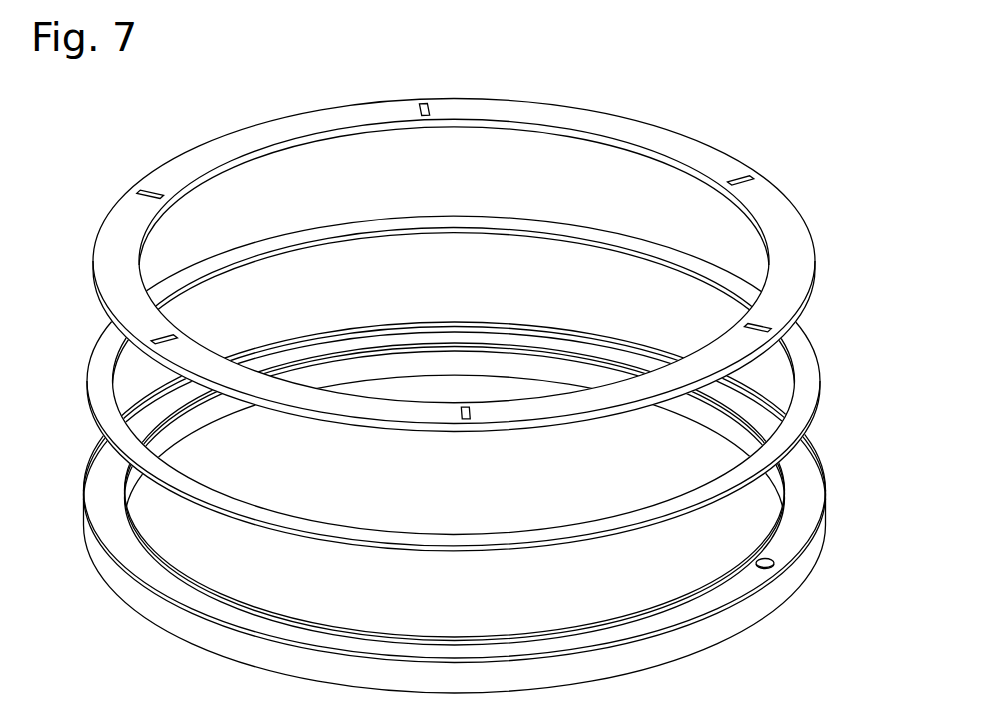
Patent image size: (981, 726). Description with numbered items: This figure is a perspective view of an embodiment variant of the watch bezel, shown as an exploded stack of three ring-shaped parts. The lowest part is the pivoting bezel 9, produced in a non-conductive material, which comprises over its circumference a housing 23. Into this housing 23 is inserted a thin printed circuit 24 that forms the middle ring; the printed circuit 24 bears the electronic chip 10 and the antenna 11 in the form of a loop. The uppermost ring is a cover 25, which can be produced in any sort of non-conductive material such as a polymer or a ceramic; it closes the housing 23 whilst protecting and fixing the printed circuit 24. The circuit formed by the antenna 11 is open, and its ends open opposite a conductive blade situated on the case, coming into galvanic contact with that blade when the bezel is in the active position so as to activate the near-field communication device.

The pivoting bezel 9 is at (483, 507).
The housing 23 is at (797, 515).
The antenna 11 is at (484, 383).
The printed circuit 24 is at (813, 352).
The electronic chip 10 is at (750, 457).
The cover 25 is at (803, 214).